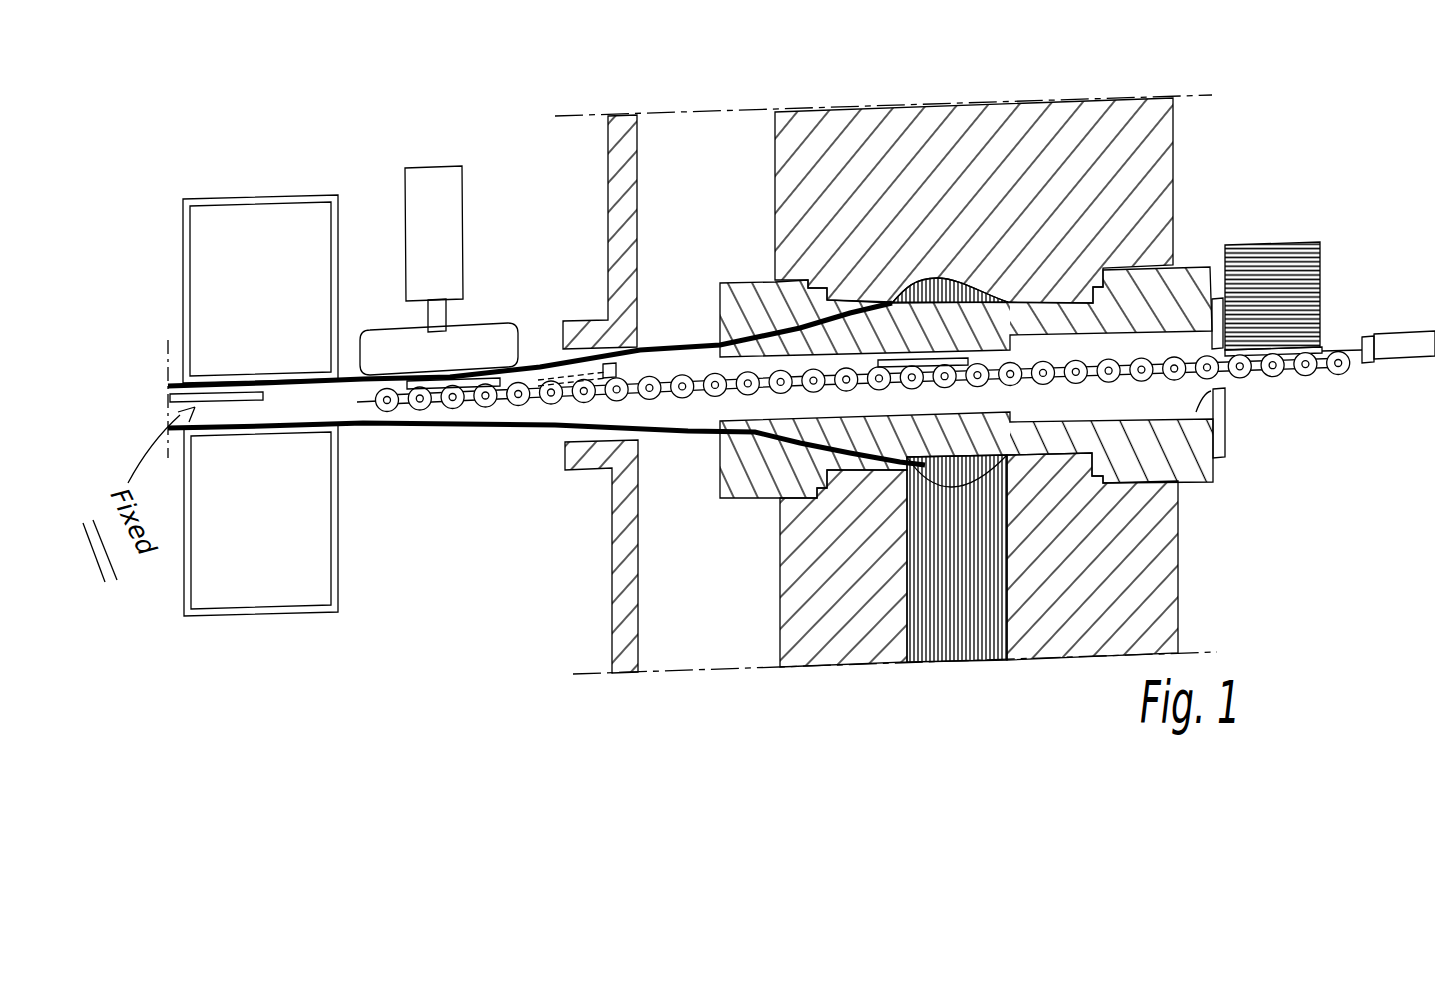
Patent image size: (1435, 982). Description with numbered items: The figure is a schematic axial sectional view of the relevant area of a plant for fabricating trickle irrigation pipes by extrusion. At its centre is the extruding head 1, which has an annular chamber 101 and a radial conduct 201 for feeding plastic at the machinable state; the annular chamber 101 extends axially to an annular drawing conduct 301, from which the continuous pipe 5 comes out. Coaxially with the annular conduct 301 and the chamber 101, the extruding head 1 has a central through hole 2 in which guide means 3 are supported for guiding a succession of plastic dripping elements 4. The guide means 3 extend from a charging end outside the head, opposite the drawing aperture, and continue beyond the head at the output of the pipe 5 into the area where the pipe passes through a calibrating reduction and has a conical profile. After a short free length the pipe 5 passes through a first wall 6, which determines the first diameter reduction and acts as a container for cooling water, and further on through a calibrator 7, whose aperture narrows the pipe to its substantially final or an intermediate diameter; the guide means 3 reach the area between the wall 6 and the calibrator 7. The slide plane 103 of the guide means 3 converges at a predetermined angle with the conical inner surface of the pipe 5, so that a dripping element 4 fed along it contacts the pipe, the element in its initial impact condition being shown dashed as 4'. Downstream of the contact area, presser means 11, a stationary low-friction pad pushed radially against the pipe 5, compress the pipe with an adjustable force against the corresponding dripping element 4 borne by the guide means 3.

The extruding head 1 is at (1176, 152).
The central through hole 2 is at (1224, 388).
The guide means 3 is at (1092, 386).
The dripping elements 4 is at (912, 361).
The dripping element in initial impact condition 4' is at (530, 338).
The pipe 5 is at (680, 437).
The first wall 6 is at (637, 193).
The calibrator 7 is at (257, 190).
The presser means 11 is at (478, 320).
The annular chamber 101 is at (957, 282).
The slide plane 103 is at (513, 412).
The radial conduct 201 is at (913, 622).
The annular drawing conduct 301 is at (808, 333).